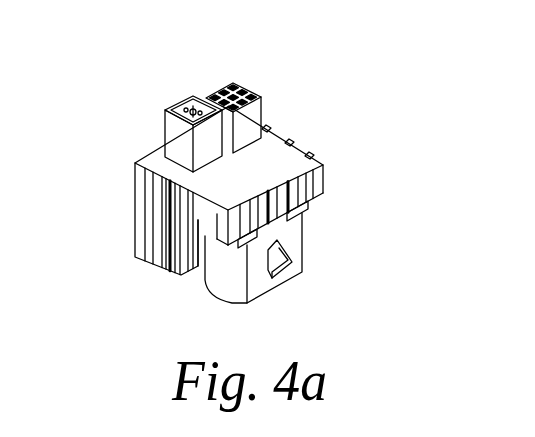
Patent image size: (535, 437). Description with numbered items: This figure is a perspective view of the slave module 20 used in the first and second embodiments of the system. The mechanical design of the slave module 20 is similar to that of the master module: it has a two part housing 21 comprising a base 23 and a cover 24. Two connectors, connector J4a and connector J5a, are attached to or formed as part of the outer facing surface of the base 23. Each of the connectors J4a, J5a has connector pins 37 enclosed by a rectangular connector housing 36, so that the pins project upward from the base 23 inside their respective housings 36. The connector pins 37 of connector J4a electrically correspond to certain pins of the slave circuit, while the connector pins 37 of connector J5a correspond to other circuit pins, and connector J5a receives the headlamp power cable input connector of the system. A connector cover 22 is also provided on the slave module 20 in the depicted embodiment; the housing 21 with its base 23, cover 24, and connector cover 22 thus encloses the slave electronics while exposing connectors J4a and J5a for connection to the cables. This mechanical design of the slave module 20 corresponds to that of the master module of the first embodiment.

The slave module 20 is at (228, 177).
The two part housing 21 is at (142, 258).
The connector cover 22 is at (292, 240).
The base 23 is at (245, 193).
The cover 24 is at (138, 220).
The rectangular connector housing 36 is at (222, 155).
The connector pins 37 is at (183, 107).
The connector J4a is at (173, 137).
The connector J5a is at (256, 107).